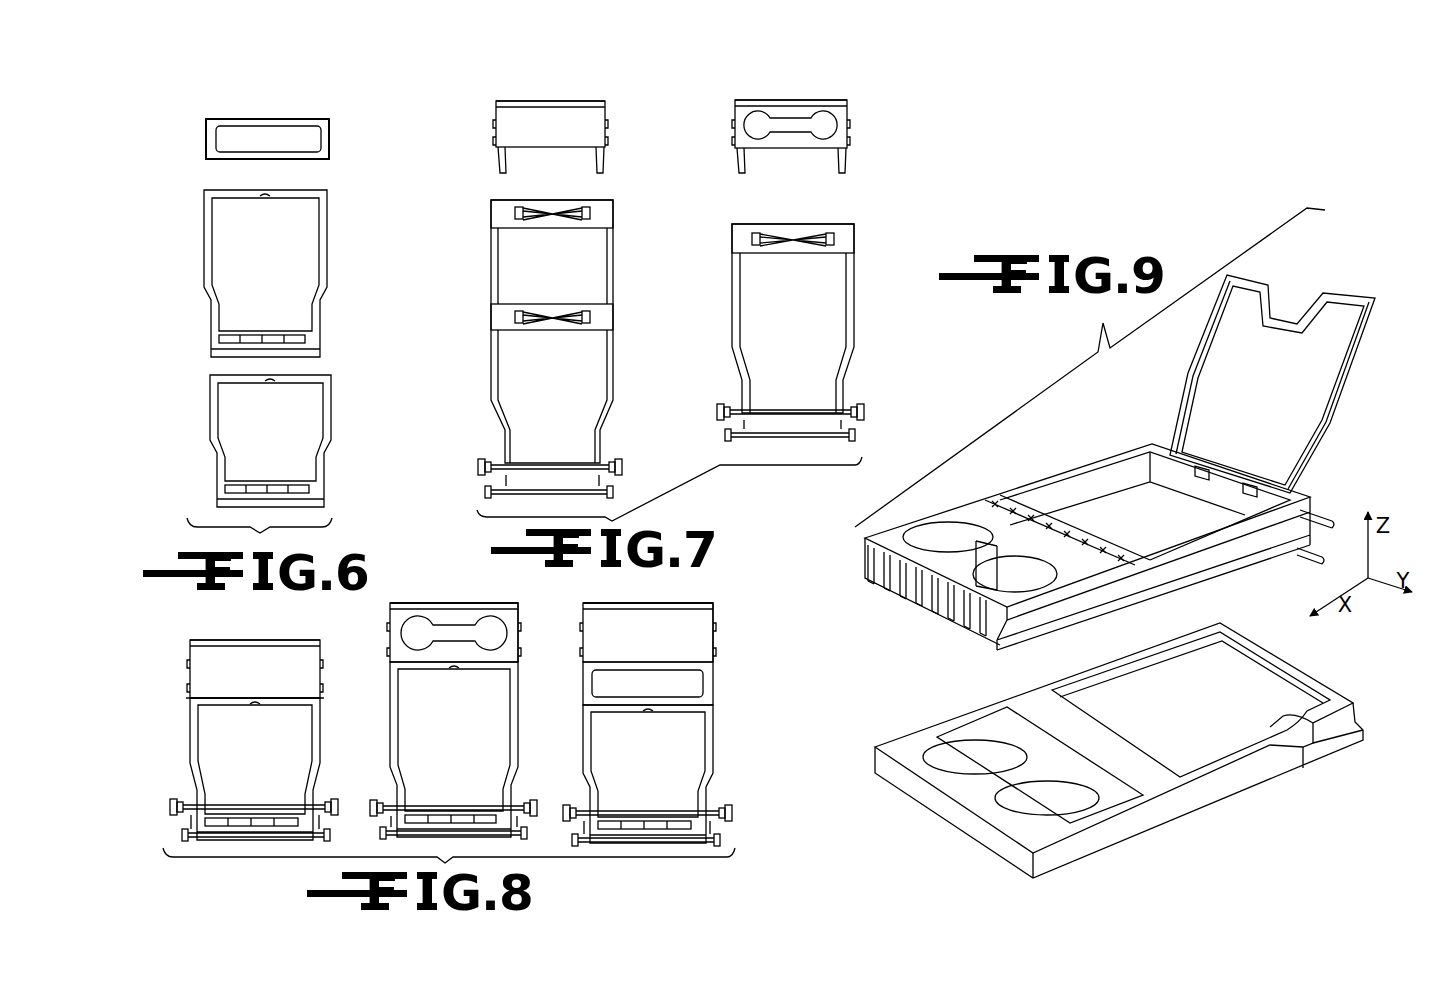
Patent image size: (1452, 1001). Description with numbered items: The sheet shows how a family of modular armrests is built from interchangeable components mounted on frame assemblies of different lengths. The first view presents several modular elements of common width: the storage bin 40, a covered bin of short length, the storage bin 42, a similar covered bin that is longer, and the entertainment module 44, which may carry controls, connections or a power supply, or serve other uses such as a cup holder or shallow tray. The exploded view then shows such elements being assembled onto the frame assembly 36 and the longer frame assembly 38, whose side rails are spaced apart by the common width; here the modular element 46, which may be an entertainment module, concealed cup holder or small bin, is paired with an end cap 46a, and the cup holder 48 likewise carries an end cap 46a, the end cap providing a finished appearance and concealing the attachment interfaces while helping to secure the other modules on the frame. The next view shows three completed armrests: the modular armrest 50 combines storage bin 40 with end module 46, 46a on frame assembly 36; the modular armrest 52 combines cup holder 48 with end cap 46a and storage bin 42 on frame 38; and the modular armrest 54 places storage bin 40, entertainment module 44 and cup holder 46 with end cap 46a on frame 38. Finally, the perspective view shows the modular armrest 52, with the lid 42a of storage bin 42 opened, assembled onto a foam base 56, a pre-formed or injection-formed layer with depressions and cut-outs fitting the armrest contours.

In FIG. 7, the frame assembly 36 is at (860, 283).
In FIG. 8, the frame assembly 36 is at (192, 800).
In FIG. 7, the frame assembly 38 is at (473, 293).
In FIG. 8, the frame assembly 38 is at (529, 795).
In FIG. 6, the storage bin 40 is at (210, 415).
In FIG. 8, the storage bin 40 is at (208, 742).
In FIG. 6, the storage bin 42 is at (204, 262).
In FIG. 8, the storage bin 42 is at (457, 756).
In FIG. 9, the storage bin 42 is at (1137, 450).
In FIG. 9, the lid 42a is at (1358, 364).
In FIG. 6, the entertainment module 44 is at (330, 137).
In FIG. 8, the entertainment module 44 is at (690, 687).
In FIG. 7, the modular element 46 is at (605, 119).
In FIG. 8, the modular element 46 is at (200, 666).
In FIG. 7, the end cap 46a is at (518, 100).
In FIG. 8, the end cap 46a is at (217, 638).
In FIG. 7, the cup holder 48 is at (846, 133).
In FIG. 8, the cup holder 48 is at (519, 621).
In FIG. 9, the cup holder 48 is at (912, 525).
In FIG. 8, the modular armrest 50 is at (186, 706).
In FIG. 8, the modular armrest 52 is at (491, 600).
In FIG. 9, the modular armrest 52 is at (1344, 280).
In FIG. 8, the modular armrest 54 is at (719, 618).
In FIG. 9, the foam base 56 is at (1208, 836).